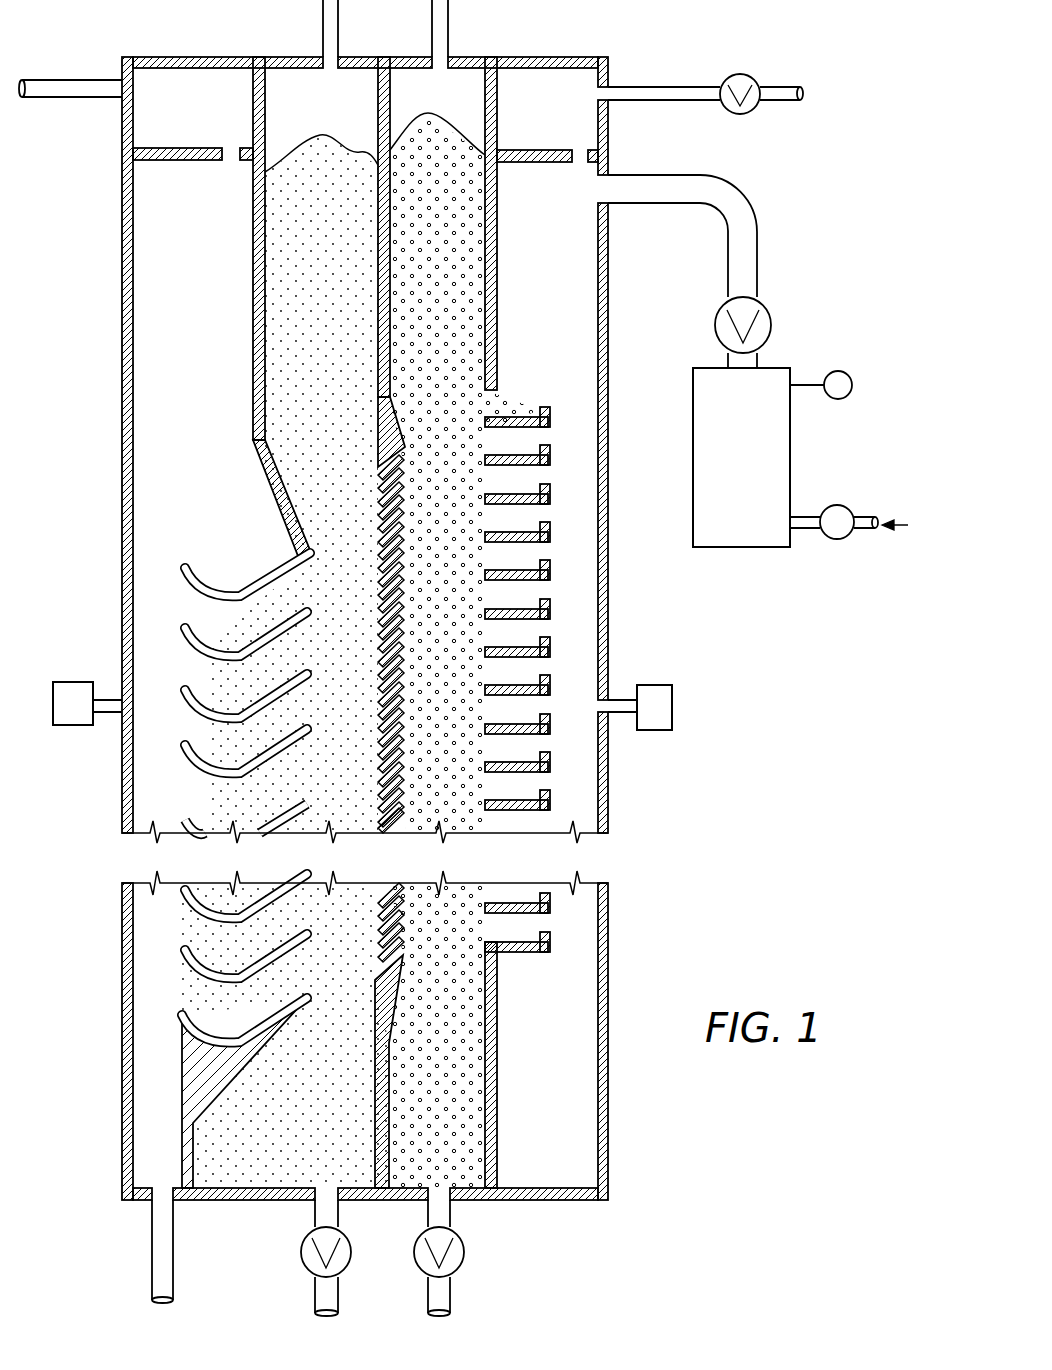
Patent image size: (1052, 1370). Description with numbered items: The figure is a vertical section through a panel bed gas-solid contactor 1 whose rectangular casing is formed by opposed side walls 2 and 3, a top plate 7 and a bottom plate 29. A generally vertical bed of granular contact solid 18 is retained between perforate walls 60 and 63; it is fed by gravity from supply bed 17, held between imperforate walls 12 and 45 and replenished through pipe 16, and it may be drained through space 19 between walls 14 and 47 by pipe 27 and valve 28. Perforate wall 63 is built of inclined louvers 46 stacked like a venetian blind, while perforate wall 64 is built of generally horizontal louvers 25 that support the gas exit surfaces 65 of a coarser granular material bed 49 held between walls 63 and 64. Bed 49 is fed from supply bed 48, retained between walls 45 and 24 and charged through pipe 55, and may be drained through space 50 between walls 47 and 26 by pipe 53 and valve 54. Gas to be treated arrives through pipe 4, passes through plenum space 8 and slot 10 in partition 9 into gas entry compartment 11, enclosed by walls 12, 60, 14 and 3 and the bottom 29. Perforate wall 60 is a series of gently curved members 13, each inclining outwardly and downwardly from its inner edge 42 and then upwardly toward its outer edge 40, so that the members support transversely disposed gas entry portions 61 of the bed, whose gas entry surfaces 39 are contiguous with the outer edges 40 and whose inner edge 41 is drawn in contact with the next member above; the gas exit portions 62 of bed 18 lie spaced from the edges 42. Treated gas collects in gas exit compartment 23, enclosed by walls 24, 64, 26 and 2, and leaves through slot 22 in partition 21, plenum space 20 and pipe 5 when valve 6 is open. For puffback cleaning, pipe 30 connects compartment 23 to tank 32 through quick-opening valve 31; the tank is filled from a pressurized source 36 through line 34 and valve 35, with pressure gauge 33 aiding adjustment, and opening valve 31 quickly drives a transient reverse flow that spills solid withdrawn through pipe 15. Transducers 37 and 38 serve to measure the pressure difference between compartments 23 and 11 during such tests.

The panel bed gas-solid contactor 1 is at (118, 414).
The side wall 2 is at (605, 392).
The side wall 3 is at (122, 264).
The pipe 4 is at (66, 88).
The pipe 5 is at (666, 92).
The valve 6 is at (748, 82).
The top plate 7 is at (190, 57).
The plenum space 8 is at (178, 86).
The partition 9 is at (172, 153).
The slot 10 is at (232, 160).
The gas entry compartment 11 is at (178, 330).
The imperforate wall 12 is at (253, 286).
The member 13 is at (197, 580).
The wall 14 is at (182, 1147).
The pipe 15 is at (152, 1250).
The pipe 16 is at (325, 12).
The supply bed 17 is at (305, 356).
The bed of granular contact solid 18 is at (368, 582).
The space 19 is at (334, 1135).
The plenum space 20 is at (567, 94).
The partition 21 is at (524, 156).
The slot 22 is at (580, 162).
The gas exit compartment 23 is at (555, 300).
The imperforate wall 24 is at (498, 263).
The louvers 25 is at (550, 498).
The wall 26 is at (496, 1129).
The pipe 27 is at (340, 1218).
The valve 28 is at (343, 1264).
The bottom plate 29 is at (234, 1202).
The pipe 30 is at (692, 186).
The quick-opening valve 31 is at (765, 326).
The tank 32 is at (794, 450).
The pressure gauge 33 is at (838, 374).
The line 34 is at (806, 530).
The valve 35 is at (858, 495).
The source of gas under pressure 36 is at (888, 532).
The transducer 37 is at (68, 690).
The transducer 38 is at (656, 690).
The gas entry surface 39 is at (200, 745).
The outer edge 40 is at (186, 632).
The chute 41 is at (246, 656).
The inner edge 42 is at (302, 617).
The imperforate wall 45 is at (382, 246).
The louvers 46 is at (405, 495).
The wall 47 is at (387, 1134).
The supply bed 48 is at (455, 343).
The granular material bed 49 is at (460, 547).
The space 50 is at (458, 1024).
The pipe 53 is at (452, 1218).
The valve 54 is at (456, 1265).
The pipe 55 is at (434, 28).
The perforate wall 60 is at (180, 904).
The gas entry portions 61 is at (236, 752).
The gas exit portions 62 is at (366, 776).
The perforate wall 63 is at (412, 680).
The perforate wall 64 is at (550, 752).
The gas exit surfaces 65 is at (518, 667).